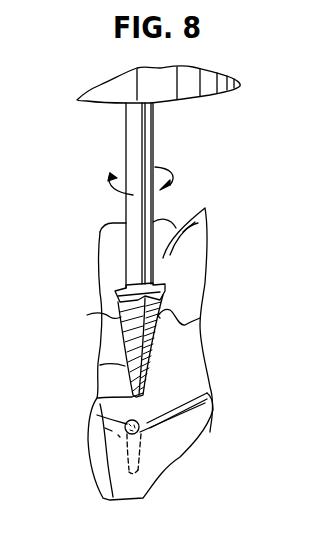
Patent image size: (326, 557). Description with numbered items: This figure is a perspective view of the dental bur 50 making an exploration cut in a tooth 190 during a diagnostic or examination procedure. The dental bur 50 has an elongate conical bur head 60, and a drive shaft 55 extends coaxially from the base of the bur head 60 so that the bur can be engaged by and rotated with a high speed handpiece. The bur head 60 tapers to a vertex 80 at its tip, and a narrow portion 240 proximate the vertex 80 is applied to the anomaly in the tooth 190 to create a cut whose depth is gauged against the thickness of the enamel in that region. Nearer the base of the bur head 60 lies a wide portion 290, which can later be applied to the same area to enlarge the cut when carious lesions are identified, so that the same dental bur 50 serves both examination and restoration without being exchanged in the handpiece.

The dental bur 50 is at (120, 268).
The drive shaft 55 is at (153, 133).
The bur head 60 is at (87, 315).
The vertex 80 is at (98, 398).
The tooth 190 is at (190, 243).
The narrow portion 240 is at (100, 365).
The wide portion 290 is at (200, 318).